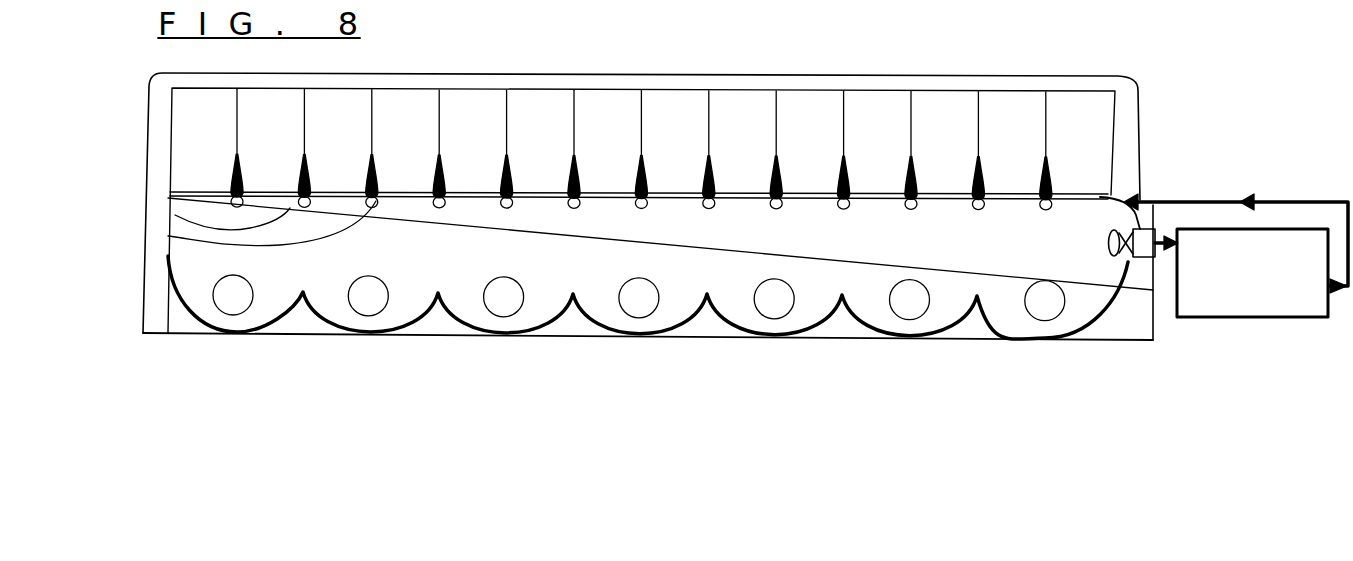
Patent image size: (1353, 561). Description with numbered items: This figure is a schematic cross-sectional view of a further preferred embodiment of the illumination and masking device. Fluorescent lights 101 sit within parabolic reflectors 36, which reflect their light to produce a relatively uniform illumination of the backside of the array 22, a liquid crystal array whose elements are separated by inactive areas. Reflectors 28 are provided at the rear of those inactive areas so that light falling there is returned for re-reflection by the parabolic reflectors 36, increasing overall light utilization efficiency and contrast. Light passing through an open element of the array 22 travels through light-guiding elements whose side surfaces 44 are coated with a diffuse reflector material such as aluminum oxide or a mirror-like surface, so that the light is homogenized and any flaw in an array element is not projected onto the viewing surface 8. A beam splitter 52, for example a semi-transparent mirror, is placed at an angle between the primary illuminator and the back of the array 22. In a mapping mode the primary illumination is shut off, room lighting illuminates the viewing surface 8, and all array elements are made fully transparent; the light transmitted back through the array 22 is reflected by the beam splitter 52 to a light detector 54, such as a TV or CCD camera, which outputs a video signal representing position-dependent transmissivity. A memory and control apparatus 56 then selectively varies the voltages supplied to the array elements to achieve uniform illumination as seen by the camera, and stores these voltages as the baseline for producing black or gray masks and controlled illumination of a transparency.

The viewing surface 8 is at (605, 74).
The side surfaces 44 is at (508, 160).
The array 22 is at (180, 192).
The beam splitter 52 is at (175, 215).
The reflectors 28 is at (168, 236).
The fluorescent lights 101 is at (218, 278).
The parabolic reflectors 36 is at (180, 307).
The light detector 54 is at (1140, 196).
The memory and control apparatus 56 is at (1245, 318).